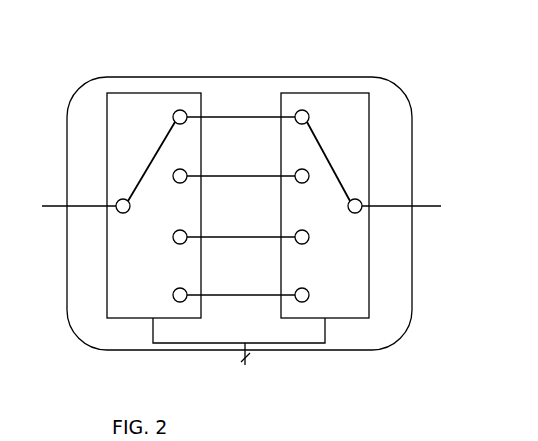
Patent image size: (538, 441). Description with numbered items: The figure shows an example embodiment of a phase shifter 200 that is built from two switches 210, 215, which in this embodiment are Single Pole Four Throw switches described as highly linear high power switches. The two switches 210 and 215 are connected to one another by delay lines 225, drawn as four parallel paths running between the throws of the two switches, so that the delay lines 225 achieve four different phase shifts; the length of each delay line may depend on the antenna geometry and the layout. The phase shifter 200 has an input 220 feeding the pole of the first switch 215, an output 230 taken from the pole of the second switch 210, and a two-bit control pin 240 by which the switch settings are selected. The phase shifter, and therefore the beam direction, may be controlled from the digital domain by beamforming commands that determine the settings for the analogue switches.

The phase shifter 200 is at (444, 107).
The switch 210 is at (325, 205).
The switch 215 is at (154, 205).
The input 220 is at (63, 206).
The delay lines 225 is at (298, 60).
The output 230 is at (425, 206).
The 2-bit control (CTRL) pin 240 is at (239, 367).